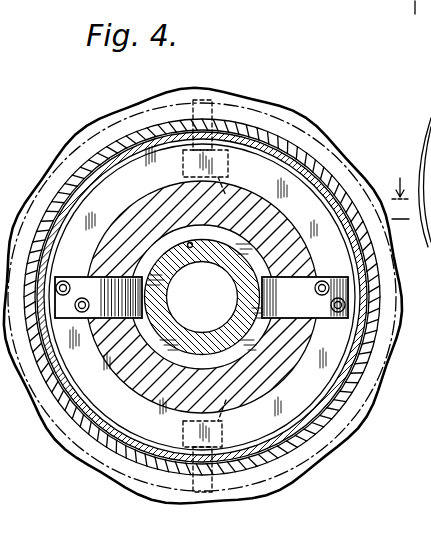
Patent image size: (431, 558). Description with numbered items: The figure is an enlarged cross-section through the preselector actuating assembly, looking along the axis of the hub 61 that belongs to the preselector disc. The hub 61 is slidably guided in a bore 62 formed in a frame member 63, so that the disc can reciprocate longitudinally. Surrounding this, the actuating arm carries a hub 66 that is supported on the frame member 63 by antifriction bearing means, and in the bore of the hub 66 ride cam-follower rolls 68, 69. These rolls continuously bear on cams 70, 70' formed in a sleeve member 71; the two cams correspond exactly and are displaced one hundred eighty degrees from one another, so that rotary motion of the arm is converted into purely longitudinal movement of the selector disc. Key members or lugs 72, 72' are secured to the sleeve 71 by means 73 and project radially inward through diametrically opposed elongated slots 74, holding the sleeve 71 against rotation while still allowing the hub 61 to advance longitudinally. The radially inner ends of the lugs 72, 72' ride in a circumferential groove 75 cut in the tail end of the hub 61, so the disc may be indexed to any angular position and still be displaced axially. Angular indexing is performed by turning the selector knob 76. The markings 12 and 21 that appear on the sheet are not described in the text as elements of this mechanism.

The hub 61 is at (229, 265).
The bore 62 is at (190, 243).
The frame member 63 is at (304, 345).
The hub of the actuator 66 is at (362, 196).
The cam-follower roll 68 is at (215, 297).
The cam-follower roll 69 is at (218, 408).
The cam 70 is at (229, 136).
The cam 70' is at (167, 445).
The sleeve member 71 is at (136, 182).
The key member 72 is at (98, 276).
The key member 72' is at (305, 278).
The securing means 73 is at (82, 298).
The elongated slot 74 is at (125, 318).
The circumferential groove 75 is at (272, 264).
The selector knob 76 is at (330, 183).
The section line 12 is at (401, 199).
The shaft 21 is at (399, 7).